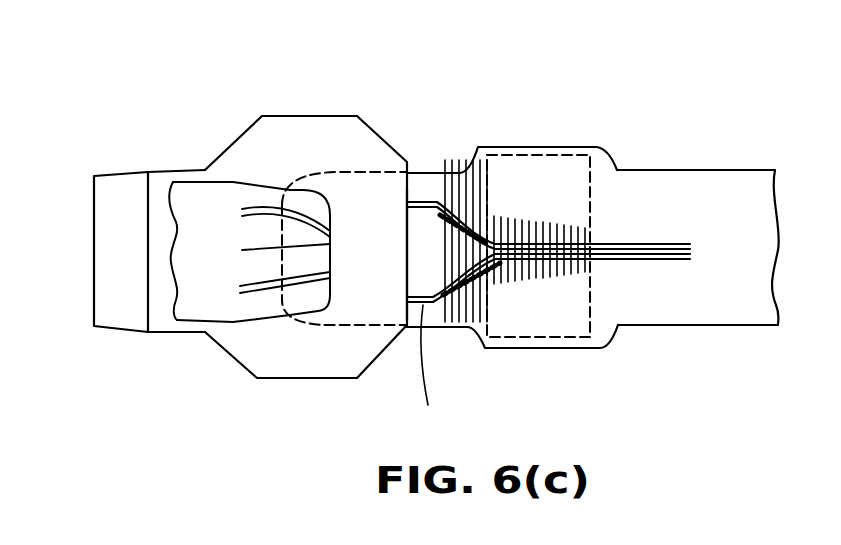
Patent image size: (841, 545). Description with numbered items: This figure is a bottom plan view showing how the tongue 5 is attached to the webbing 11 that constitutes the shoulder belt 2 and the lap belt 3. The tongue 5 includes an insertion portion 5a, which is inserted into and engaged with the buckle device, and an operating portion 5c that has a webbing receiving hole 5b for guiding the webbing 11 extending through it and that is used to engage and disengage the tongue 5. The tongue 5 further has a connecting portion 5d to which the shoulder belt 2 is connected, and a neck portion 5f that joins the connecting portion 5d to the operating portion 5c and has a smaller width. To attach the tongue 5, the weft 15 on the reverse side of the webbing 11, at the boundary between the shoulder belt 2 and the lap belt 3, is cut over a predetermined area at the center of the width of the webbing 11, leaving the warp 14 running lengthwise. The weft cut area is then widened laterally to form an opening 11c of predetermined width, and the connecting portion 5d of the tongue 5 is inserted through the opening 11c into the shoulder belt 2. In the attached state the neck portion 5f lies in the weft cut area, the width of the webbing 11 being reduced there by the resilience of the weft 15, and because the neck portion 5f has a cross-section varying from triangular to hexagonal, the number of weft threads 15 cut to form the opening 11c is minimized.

The shoulder belt 2 is at (735, 298).
The lap belt 3 is at (192, 307).
The tongue 5 is at (240, 121).
The insertion portion 5a is at (133, 185).
The webbing receiving hole 5b is at (318, 323).
The operating portion 5c is at (285, 127).
The connecting portion 5d is at (563, 172).
The neck portion 5f is at (420, 258).
The webbing 11 is at (631, 336).
The opening 11c is at (434, 375).
The warp 14 is at (663, 238).
The weft 15 is at (515, 280).